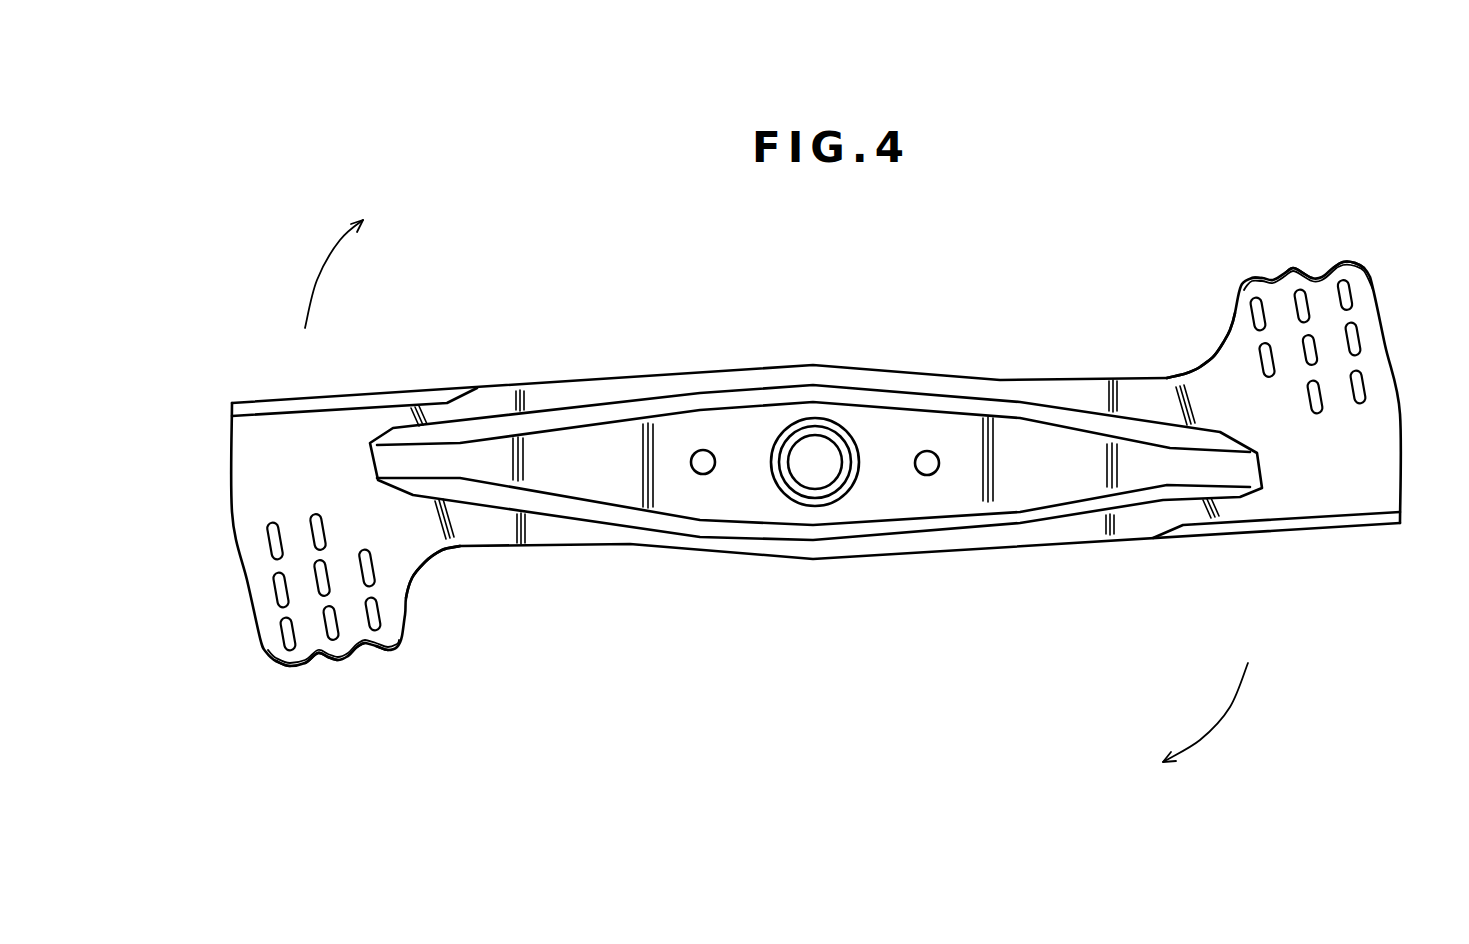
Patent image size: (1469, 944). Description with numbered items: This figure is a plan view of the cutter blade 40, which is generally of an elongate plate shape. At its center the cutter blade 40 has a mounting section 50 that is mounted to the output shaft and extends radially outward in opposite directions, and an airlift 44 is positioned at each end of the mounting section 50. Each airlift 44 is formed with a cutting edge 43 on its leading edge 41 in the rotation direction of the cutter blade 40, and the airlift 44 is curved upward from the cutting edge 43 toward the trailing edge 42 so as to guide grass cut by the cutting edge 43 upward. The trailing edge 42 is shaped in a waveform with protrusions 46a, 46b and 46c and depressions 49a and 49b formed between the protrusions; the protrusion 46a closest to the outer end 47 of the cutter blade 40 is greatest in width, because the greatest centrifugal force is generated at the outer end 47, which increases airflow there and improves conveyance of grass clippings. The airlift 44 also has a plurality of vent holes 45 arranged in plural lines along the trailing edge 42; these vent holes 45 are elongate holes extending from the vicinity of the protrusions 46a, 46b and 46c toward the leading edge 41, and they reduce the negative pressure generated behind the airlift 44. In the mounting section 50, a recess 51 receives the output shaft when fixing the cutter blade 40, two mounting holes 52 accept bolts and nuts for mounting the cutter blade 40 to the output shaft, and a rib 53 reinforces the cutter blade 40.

The cutter blade 40 is at (602, 308).
The leading edge 41 is at (350, 380).
The trailing edge 42 is at (360, 688).
The cutting edge 43 is at (387, 400).
The airlift 44 is at (390, 587).
The vent holes 45 is at (275, 553).
The protrusion 46a is at (285, 670).
The protrusion 46b is at (340, 660).
The protrusion 46c is at (393, 655).
The outer end 47 is at (232, 533).
The depression 49a is at (318, 668).
The depression 49b is at (357, 652).
The mounting section 50 is at (895, 432).
The recess 51 is at (825, 478).
The mounting holes 52 is at (703, 474).
The rib 53 is at (757, 397).